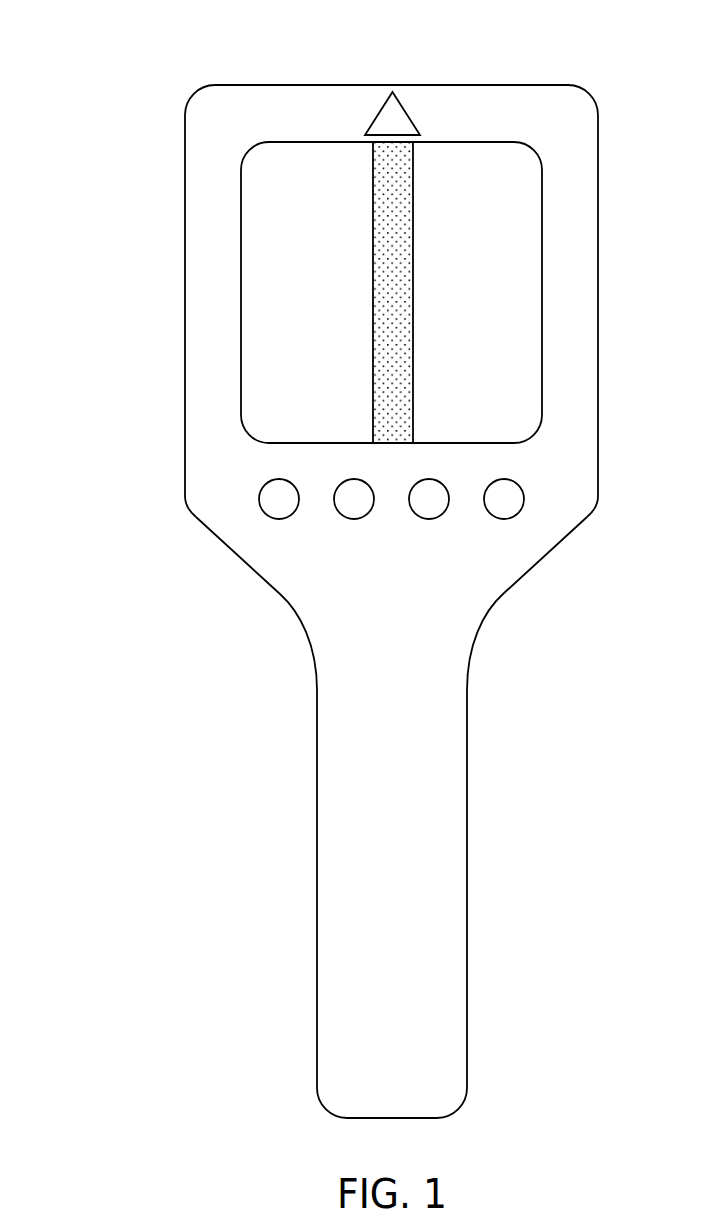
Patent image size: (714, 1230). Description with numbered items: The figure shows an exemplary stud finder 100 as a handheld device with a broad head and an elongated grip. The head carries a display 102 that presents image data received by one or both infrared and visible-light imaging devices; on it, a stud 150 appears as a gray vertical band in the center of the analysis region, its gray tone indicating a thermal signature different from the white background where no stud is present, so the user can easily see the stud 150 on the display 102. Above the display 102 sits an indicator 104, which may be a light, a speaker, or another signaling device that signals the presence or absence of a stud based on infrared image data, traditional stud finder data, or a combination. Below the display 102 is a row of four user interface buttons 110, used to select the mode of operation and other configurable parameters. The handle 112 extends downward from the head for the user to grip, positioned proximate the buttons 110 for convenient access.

The stud finder 100 is at (158, 34).
The display 102 is at (282, 160).
The indicator 104 is at (379, 113).
The stud 150 is at (383, 247).
The user interface buttons 110 is at (533, 515).
The handle 112 is at (373, 857).